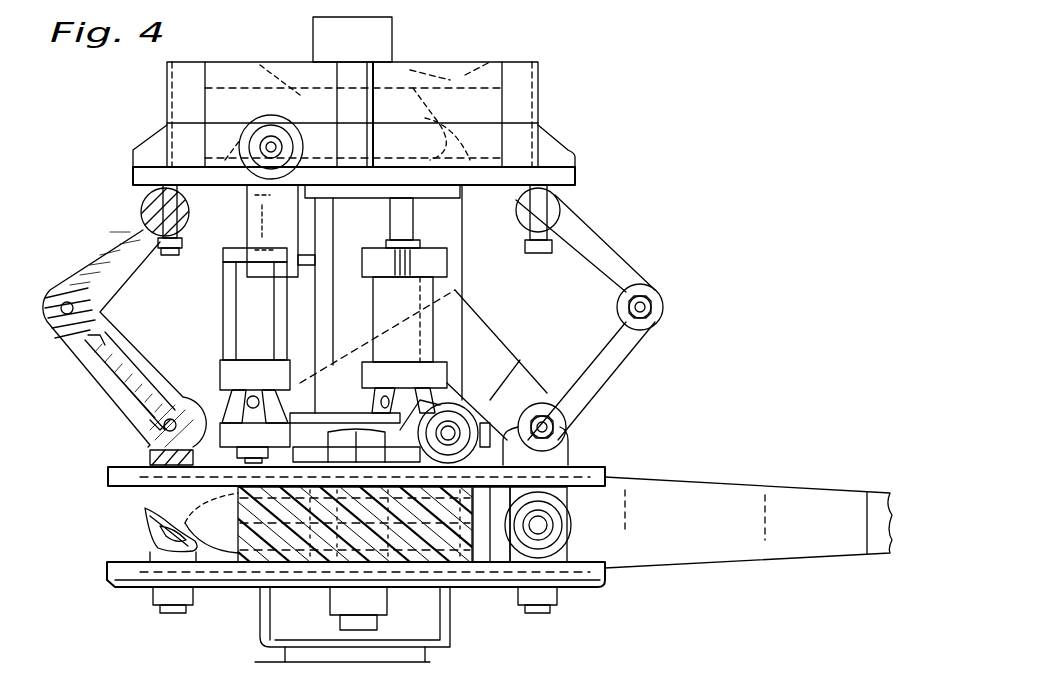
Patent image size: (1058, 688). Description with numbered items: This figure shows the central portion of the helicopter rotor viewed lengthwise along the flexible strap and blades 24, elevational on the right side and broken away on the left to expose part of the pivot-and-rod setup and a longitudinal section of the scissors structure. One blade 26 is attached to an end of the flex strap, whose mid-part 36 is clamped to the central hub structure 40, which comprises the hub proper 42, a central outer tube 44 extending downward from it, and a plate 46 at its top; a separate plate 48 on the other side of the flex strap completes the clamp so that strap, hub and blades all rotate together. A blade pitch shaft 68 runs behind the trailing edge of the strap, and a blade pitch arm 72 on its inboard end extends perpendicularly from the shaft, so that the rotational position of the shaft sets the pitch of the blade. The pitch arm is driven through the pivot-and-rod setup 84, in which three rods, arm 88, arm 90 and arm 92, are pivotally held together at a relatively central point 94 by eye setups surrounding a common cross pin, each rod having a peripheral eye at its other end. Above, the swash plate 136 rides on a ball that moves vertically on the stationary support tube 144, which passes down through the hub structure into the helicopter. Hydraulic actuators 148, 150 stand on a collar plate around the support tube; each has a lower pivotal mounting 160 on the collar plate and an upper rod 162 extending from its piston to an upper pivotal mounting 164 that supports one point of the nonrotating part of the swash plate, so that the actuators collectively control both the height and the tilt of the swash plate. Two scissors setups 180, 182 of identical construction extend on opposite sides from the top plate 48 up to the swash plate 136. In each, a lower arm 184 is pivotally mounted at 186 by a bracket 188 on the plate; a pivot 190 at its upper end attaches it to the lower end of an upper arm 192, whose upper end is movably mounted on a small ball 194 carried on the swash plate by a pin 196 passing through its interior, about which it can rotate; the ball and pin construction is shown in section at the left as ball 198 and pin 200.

The blades 24 is at (725, 483).
The blade 26 is at (663, 478).
The mid-part of flex strap 36 is at (240, 521).
The central hub structure 40 is at (260, 615).
The hub proper 42 is at (450, 618).
The central outer tube 44 is at (438, 658).
The plate 46 is at (107, 583).
The top plate 48 is at (108, 471).
The blade pitch shaft 68 is at (540, 525).
The blade pitch arm 72 is at (513, 390).
The pivot-and-rod setup 84 is at (492, 327).
The arm 88 is at (510, 395).
The arm 90 is at (292, 395).
The arm 92 is at (456, 242).
The relatively central point 94 is at (462, 312).
The swash plate 136 is at (288, 40).
The stationary support tube 144 is at (380, 235).
The hydraulic actuator 148 is at (222, 300).
The hydraulic actuator 150 is at (373, 303).
The lower pivotal mounting 160 is at (362, 422).
The upper rod 162 is at (412, 221).
The upper pivotal mounting 164 is at (456, 204).
The scissors setup 180 is at (100, 250).
The scissors setup 182 is at (666, 256).
The lower arm 184 is at (620, 372).
The pivot 186 is at (560, 427).
The bracket 188 is at (572, 447).
The pivot 190 is at (653, 307).
The upper arm 192 is at (660, 290).
The small ball 194 is at (567, 210).
The pin 196 is at (558, 190).
The ball 198 is at (188, 218).
The pin 200 is at (143, 212).